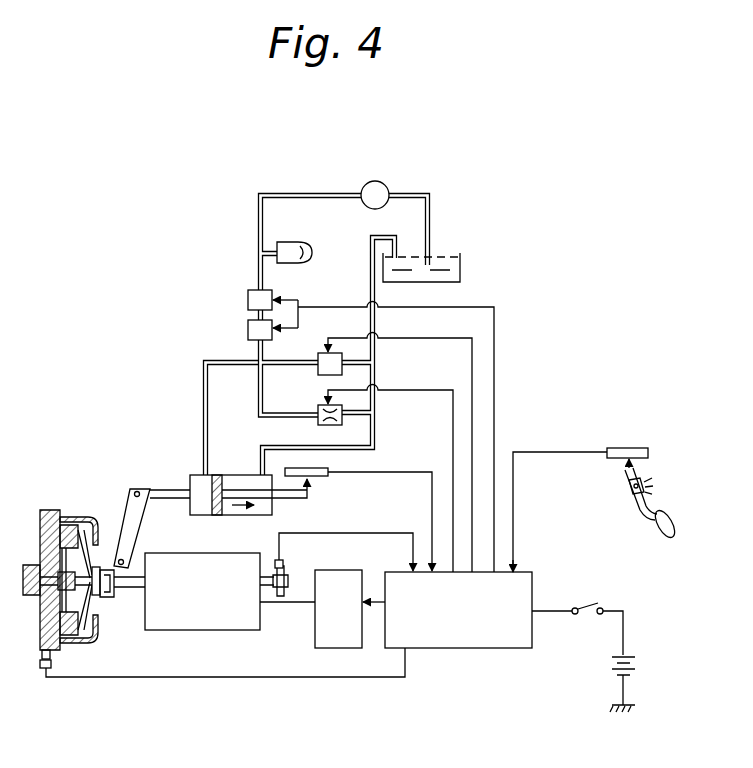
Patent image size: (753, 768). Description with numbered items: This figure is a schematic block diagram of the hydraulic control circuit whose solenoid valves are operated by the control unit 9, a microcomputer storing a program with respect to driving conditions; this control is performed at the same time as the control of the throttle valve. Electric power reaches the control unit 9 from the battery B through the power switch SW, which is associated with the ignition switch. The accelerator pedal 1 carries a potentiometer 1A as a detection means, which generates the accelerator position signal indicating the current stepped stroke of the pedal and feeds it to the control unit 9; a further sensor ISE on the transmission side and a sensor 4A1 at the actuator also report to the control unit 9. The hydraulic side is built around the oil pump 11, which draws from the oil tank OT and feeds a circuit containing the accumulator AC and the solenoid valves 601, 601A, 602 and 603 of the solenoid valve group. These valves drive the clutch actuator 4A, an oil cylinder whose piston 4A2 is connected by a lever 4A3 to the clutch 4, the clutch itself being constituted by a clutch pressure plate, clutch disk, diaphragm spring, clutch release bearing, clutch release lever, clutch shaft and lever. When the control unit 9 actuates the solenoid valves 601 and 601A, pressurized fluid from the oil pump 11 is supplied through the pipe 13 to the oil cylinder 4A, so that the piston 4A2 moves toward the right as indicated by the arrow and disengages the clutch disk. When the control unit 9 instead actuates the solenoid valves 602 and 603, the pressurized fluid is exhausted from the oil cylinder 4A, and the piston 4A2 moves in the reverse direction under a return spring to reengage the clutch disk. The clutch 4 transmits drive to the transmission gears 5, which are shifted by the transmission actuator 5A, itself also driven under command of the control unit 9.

The accelerator pedal 1 is at (630, 508).
The potentiometer 1A is at (633, 447).
The clutch 4 is at (72, 506).
The clutch actuator 4A is at (293, 501).
The actuator stroke sensor 4A1 is at (332, 478).
The piston 4A2 is at (232, 474).
The clutch release lever 4A3 is at (138, 486).
The transmission gears 5 is at (210, 631).
The transmission actuator 5A is at (315, 637).
The control unit 9 is at (495, 650).
The oil pump 11 is at (385, 184).
The hydraulic pipe 13 is at (206, 389).
The solenoid valve 601 is at (247, 330).
The solenoid valve 601A is at (247, 293).
The solenoid valve 602 is at (340, 424).
The solenoid valve 603 is at (322, 352).
The accumulator AC is at (299, 243).
The oil tank OT is at (462, 257).
The input shaft speed sensor ISE is at (284, 565).
The power switch SW is at (590, 603).
The battery B is at (636, 660).